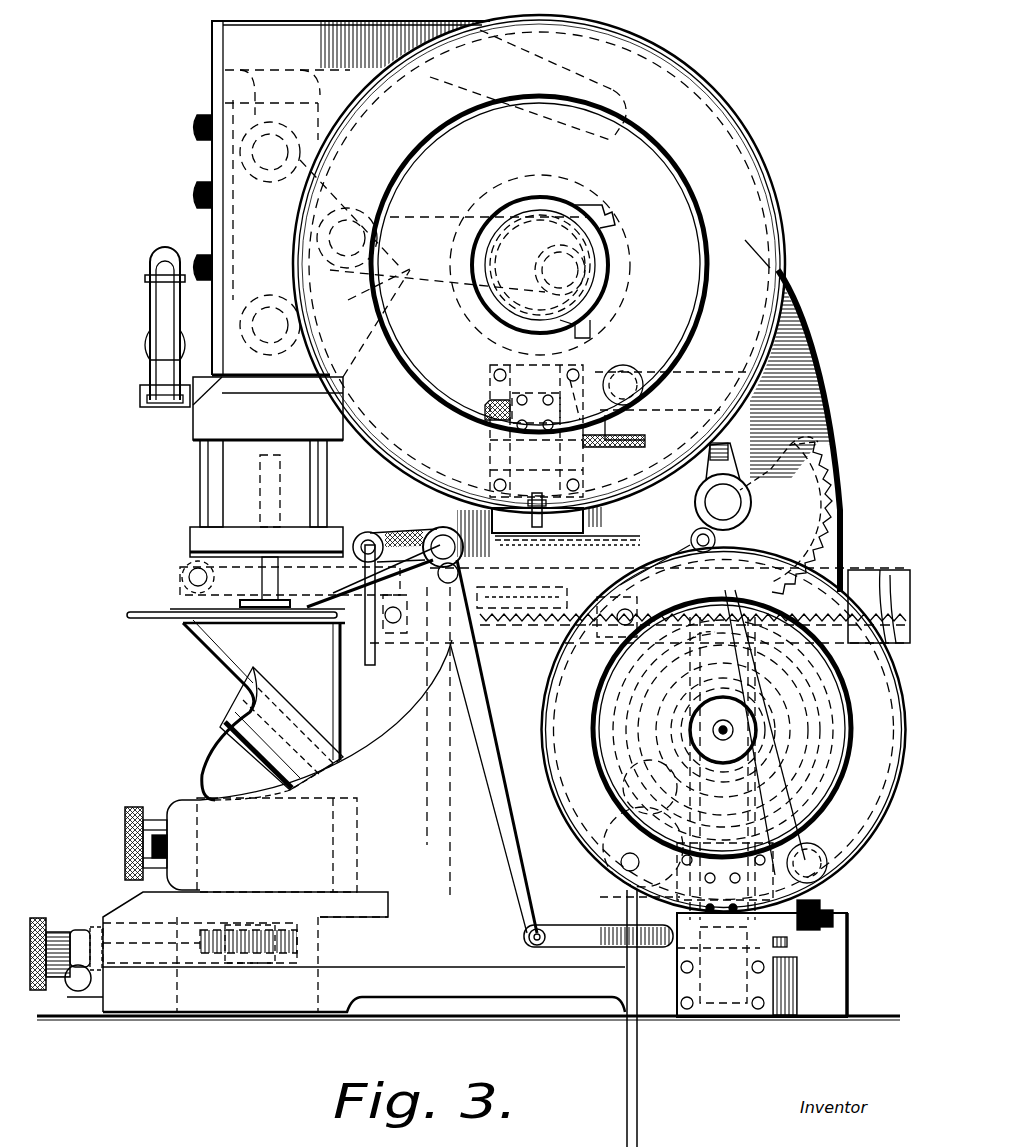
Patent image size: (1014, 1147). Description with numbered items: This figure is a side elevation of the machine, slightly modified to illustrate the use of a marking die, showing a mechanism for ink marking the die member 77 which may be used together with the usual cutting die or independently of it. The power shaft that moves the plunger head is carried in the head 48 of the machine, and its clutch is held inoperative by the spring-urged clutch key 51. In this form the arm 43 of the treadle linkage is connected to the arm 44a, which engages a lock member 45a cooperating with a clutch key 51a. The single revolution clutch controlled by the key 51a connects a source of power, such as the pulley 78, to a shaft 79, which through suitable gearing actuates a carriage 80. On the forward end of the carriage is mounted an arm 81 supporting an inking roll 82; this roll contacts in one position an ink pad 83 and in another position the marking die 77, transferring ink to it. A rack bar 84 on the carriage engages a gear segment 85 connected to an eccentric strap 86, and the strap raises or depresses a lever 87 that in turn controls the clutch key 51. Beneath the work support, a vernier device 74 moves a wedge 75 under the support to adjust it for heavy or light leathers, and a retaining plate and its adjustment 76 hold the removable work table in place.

The head 48 is at (226, 52).
The clutch key 51 is at (575, 345).
The clutch key 51a is at (733, 973).
The arm 81 is at (590, 580).
The ink pad 83 is at (530, 622).
The lever 87 is at (748, 402).
The eccentric strap 86 is at (733, 447).
The gear segment 85 is at (837, 437).
The carriage 80 is at (863, 577).
The pulley 78 is at (843, 833).
The shaft 79 is at (718, 730).
The rack bar 84 is at (670, 655).
The lock member 45a is at (587, 910).
The arm 44a is at (487, 760).
The arm 43 is at (387, 560).
The marking die 77 is at (186, 562).
The inking roll 82 is at (180, 578).
The retaining plate and adjustment 76 is at (133, 806).
The wedge 75 is at (275, 905).
The vernier device 74 is at (101, 925).